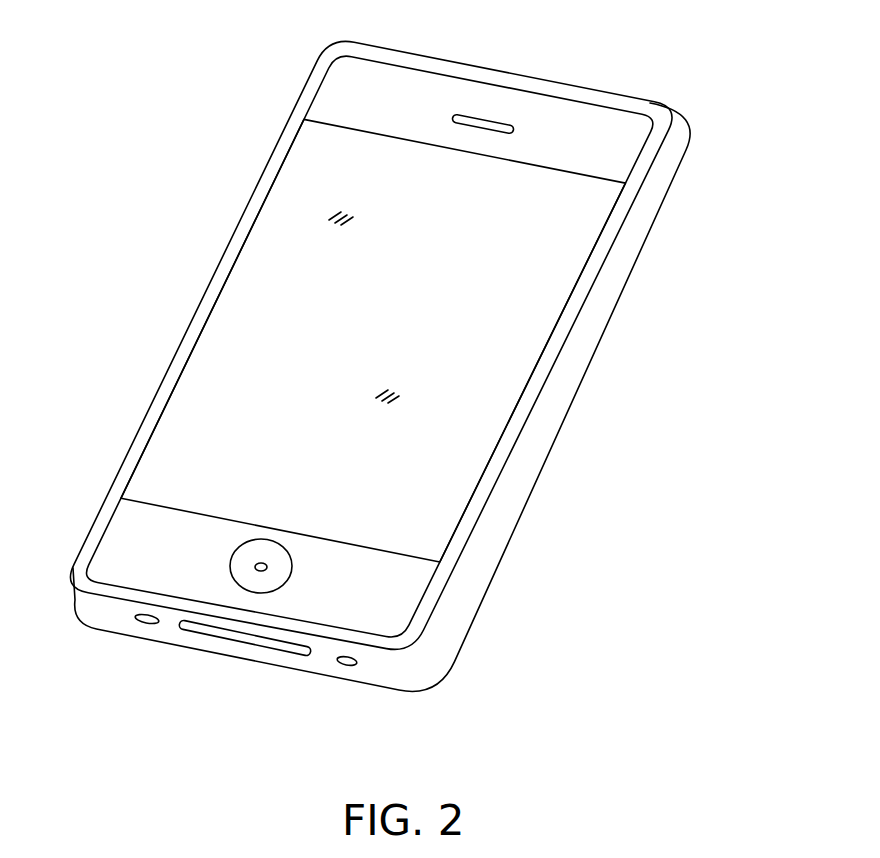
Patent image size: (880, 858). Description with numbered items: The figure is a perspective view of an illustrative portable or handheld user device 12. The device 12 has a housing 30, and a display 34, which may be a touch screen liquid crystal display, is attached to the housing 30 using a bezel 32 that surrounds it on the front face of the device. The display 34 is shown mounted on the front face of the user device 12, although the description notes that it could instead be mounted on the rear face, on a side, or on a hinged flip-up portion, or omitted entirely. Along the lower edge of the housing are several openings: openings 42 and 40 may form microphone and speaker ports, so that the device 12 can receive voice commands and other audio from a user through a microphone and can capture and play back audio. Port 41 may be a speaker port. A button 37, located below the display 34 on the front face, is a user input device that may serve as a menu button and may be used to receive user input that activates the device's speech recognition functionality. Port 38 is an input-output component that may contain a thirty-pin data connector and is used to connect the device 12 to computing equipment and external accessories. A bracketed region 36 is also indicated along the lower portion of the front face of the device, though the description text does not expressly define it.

The user device 12 is at (400, 379).
The housing 30 is at (507, 507).
The bezel 32 is at (218, 268).
The display 34 is at (587, 213).
The inactive border region 36 is at (103, 492).
The button 37 is at (250, 593).
The port 38 is at (283, 651).
The opening 40 is at (147, 624).
The port 41 is at (504, 122).
The opening 42 is at (347, 665).